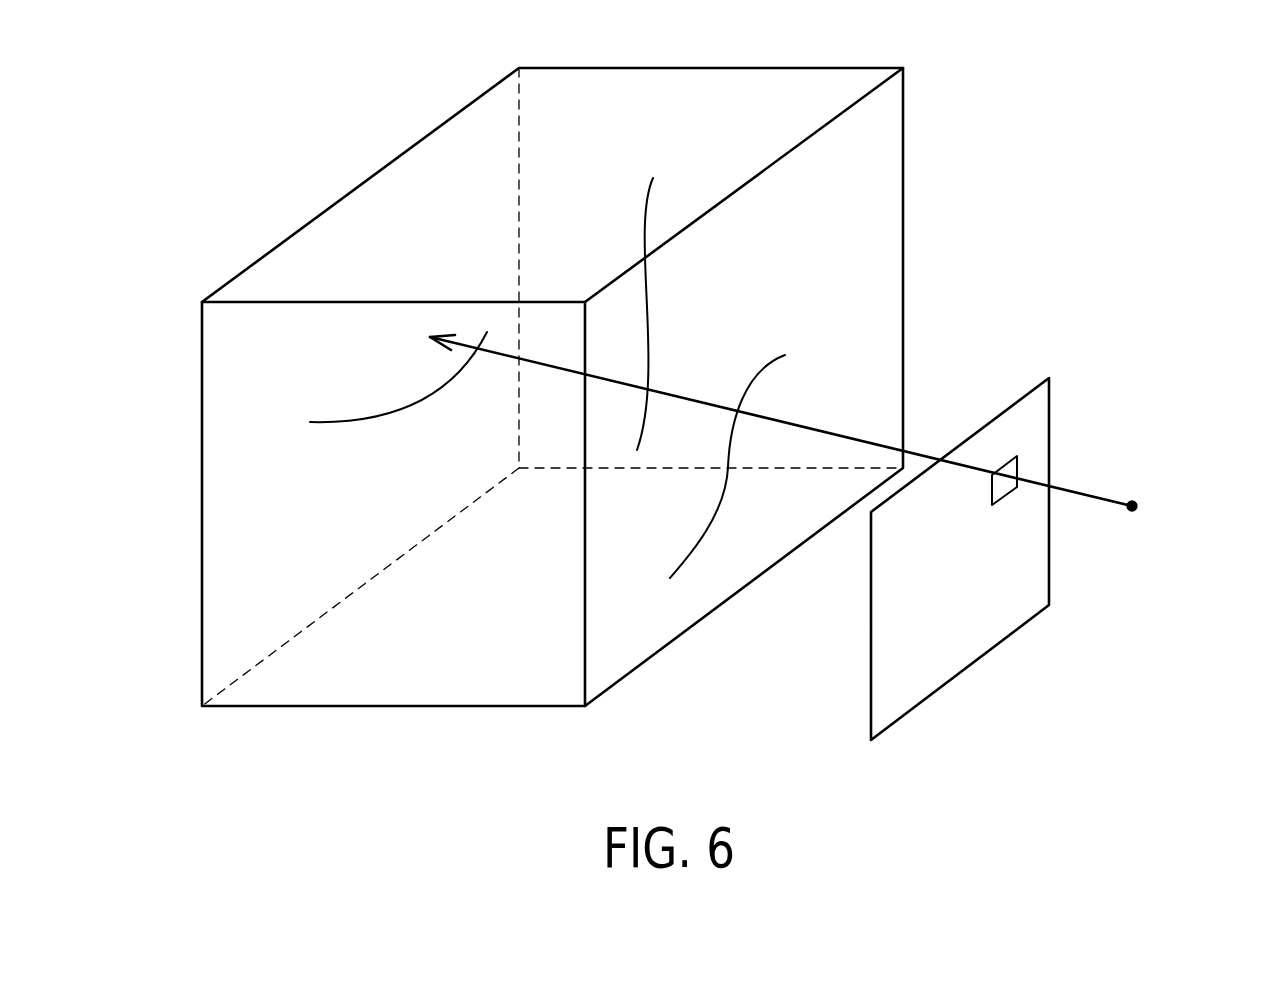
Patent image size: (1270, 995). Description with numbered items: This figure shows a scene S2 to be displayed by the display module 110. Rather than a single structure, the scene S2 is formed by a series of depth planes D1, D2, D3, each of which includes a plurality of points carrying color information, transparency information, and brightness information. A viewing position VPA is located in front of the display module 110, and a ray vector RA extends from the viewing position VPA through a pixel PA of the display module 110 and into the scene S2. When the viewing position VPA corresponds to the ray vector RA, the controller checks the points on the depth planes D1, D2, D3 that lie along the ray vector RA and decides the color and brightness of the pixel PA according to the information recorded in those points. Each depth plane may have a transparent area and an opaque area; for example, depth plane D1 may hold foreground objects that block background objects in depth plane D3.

The scene S2 is at (873, 65).
The depth plane D1 is at (749, 460).
The depth plane D2 is at (658, 296).
The depth plane D3 is at (401, 377).
The display module 110 is at (1049, 415).
The pixel PA is at (1018, 468).
The viewing position VPA is at (1164, 503).
The ray vector RA is at (1083, 497).